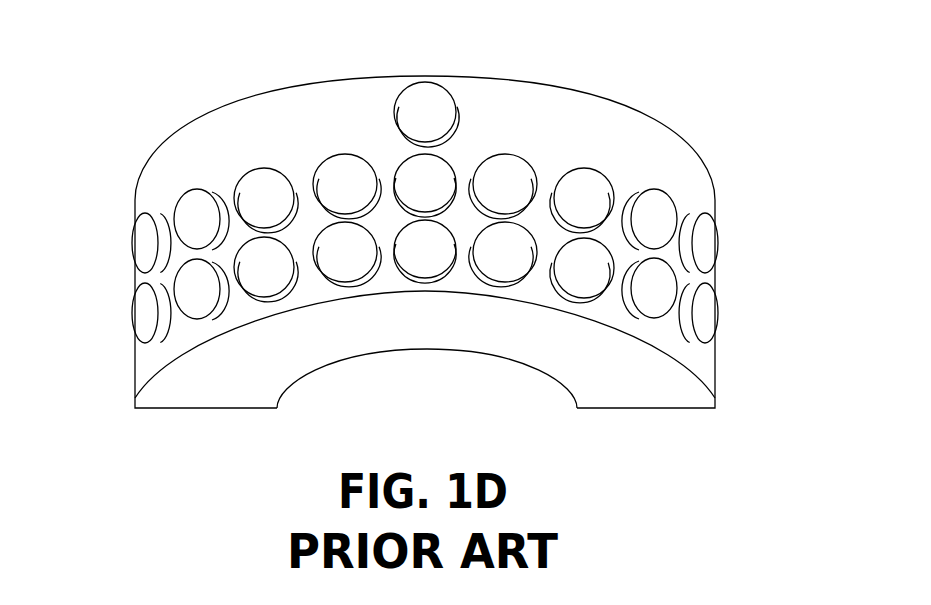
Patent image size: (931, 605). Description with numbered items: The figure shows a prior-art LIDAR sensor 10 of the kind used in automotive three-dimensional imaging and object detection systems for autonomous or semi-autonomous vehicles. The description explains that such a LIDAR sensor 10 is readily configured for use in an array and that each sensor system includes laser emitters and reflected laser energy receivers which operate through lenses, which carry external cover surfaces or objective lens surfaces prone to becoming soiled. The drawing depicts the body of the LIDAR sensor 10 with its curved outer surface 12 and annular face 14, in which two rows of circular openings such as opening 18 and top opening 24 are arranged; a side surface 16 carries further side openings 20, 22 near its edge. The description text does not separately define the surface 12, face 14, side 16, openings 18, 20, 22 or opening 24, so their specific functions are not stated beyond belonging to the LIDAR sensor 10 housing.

The LIDAR sensor 10 is at (640, 62).
The outer surface 12 is at (358, 77).
The annular face 14 is at (280, 113).
The side surface 16 is at (727, 238).
The opening 18 is at (662, 196).
The side opening 20 is at (728, 307).
The side opening 22 is at (134, 316).
The top opening 24 is at (443, 103).